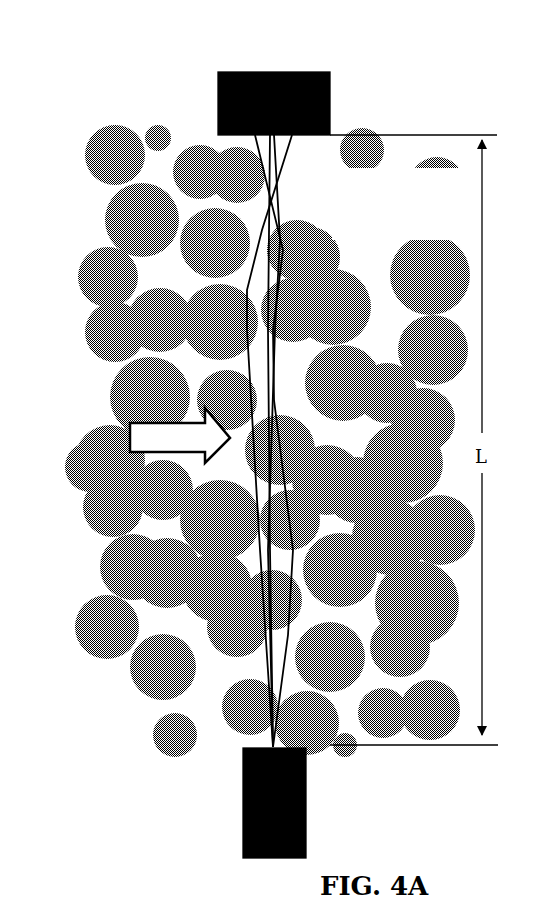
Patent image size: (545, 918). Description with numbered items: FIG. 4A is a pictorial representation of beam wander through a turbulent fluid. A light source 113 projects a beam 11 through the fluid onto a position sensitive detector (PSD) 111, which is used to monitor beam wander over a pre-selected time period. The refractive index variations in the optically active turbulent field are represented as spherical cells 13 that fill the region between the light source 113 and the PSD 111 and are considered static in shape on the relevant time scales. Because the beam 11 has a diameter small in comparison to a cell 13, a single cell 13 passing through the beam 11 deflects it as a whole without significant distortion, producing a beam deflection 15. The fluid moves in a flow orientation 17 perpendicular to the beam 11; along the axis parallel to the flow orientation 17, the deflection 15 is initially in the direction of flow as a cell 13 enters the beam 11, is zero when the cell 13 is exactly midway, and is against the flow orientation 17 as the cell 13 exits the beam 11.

The beam 11 is at (288, 635).
The spherical cells 13 is at (438, 338).
The beam deflection 15 is at (256, 143).
The flow orientation 17 is at (170, 422).
The position sensitive detector (PSD) 111 is at (307, 113).
The light source 113 is at (292, 830).